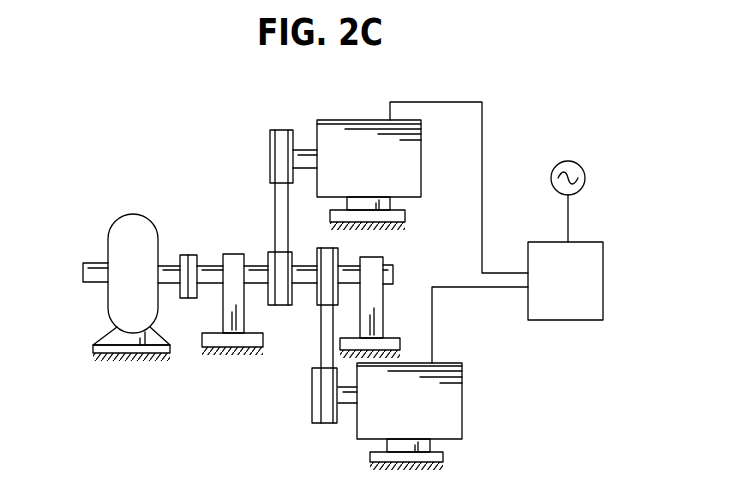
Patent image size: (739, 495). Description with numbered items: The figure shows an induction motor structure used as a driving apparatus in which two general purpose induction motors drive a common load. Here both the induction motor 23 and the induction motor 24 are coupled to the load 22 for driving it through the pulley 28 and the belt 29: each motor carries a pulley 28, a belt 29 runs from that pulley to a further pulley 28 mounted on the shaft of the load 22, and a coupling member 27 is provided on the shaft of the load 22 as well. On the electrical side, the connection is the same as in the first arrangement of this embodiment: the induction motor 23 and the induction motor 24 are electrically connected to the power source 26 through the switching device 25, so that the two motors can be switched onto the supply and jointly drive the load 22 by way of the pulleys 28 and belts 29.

The load 22 is at (135, 238).
The induction motor 23 is at (421, 176).
The induction motor 24 is at (462, 420).
The switching device 25 is at (590, 283).
The power source 26 is at (586, 180).
The coupling member 27 is at (188, 254).
The pulley 28 is at (271, 157).
The belt 29 is at (280, 212).